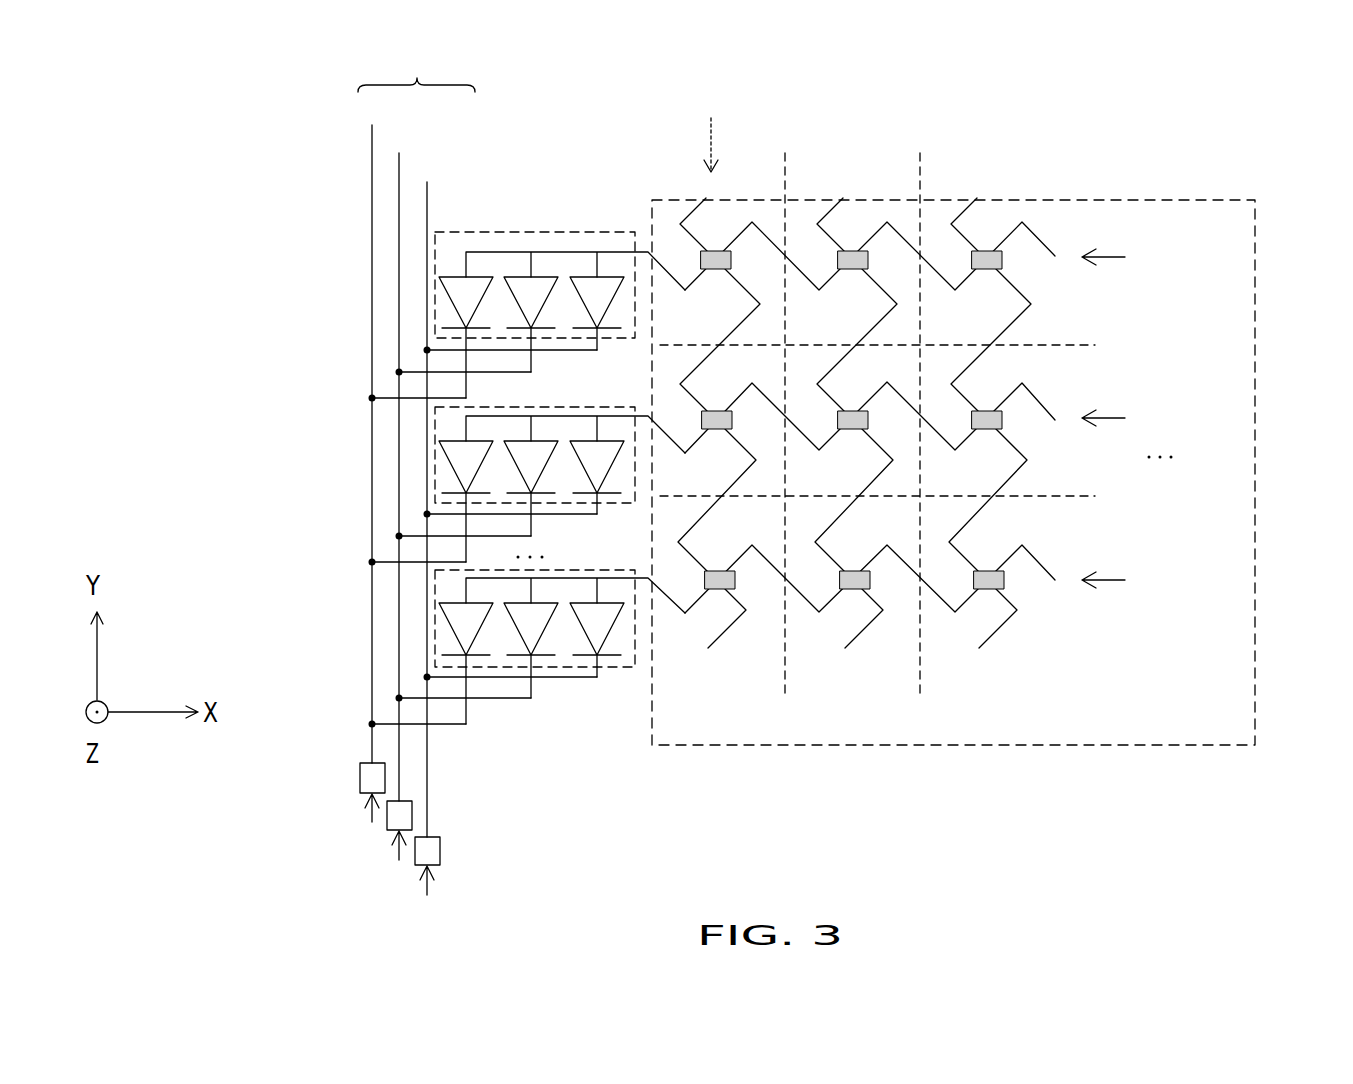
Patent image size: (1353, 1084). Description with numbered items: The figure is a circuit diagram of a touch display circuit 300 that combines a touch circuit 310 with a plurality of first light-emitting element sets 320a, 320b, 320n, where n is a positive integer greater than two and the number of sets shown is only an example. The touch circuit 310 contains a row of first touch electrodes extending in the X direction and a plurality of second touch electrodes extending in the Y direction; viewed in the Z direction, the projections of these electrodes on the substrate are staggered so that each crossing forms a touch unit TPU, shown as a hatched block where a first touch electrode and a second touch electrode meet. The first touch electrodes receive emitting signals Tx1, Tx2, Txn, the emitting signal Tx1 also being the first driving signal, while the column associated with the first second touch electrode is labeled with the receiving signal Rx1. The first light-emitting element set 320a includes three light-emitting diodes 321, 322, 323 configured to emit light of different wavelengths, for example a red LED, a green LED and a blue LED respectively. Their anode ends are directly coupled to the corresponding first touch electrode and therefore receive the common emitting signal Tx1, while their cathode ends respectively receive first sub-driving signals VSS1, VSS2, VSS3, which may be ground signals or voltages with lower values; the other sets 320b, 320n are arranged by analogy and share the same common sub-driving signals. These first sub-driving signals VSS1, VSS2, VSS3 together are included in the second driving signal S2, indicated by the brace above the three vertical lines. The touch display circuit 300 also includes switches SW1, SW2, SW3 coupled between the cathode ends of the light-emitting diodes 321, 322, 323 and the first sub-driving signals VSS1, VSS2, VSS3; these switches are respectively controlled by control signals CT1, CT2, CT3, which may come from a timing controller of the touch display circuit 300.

The touch display circuit 300 is at (1318, 858).
The touch circuit 310 is at (1152, 200).
The first light-emitting element set 320a is at (618, 230).
The first light-emitting element set 320b is at (540, 405).
The first light-emitting element set 320n is at (628, 570).
The light-emitting diode 321 is at (447, 275).
The light-emitting diode 322 is at (512, 275).
The light-emitting diode 323 is at (577, 275).
The touch unit TPU is at (698, 257).
The receiving signal Rx1 is at (711, 131).
The common emitting signal Tx1 is at (1160, 258).
The emitting signal Tx2 is at (1159, 431).
The emitting signal Txn is at (1159, 581).
The second driving signal S2 is at (416, 70).
The first sub-driving signal VSS1 is at (402, 429).
The first sub-driving signal VSS2 is at (455, 462).
The first sub-driving signal VSS3 is at (503, 495).
The switch SW1 is at (360, 778).
The switch SW2 is at (412, 815).
The switch SW3 is at (440, 850).
The control signal CT1 is at (360, 825).
The control signal CT2 is at (388, 862).
The control signal CT3 is at (425, 897).